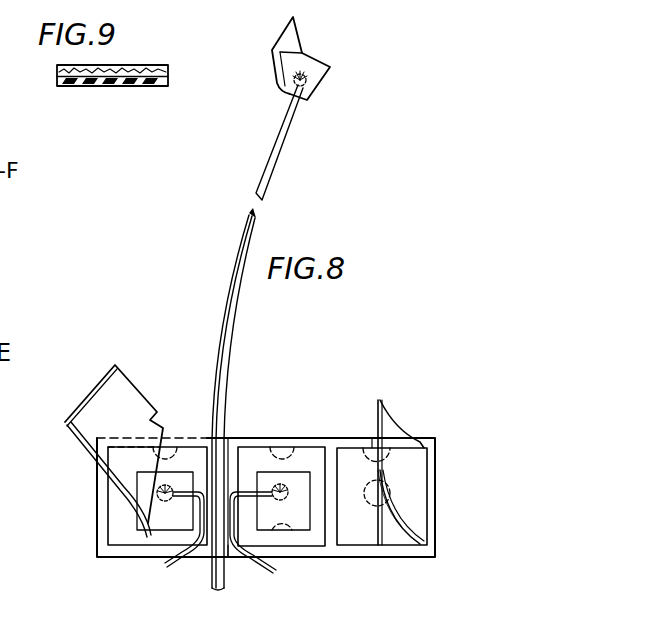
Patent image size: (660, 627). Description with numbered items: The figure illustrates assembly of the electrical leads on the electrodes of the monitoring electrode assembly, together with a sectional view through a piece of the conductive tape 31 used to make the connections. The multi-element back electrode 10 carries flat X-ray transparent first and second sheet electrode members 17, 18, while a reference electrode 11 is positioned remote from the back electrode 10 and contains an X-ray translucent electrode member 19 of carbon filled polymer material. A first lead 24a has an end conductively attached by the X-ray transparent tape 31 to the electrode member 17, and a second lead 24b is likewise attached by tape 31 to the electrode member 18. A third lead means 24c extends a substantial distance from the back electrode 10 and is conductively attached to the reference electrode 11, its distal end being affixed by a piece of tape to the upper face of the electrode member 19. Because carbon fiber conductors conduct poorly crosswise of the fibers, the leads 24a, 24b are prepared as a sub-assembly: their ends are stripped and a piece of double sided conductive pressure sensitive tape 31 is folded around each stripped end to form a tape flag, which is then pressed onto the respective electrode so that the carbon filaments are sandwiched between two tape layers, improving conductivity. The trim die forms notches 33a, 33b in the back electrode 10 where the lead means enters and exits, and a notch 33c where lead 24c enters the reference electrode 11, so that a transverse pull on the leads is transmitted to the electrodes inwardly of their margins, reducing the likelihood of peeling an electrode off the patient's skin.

In FIG. 8, the multi-element back electrode 10 is at (294, 428).
In FIG. 8, the reference electrode 11 is at (397, 413).
In FIG. 8, the first sheet electrode member 17 is at (183, 450).
In FIG. 8, the second sheet electrode member 18 is at (313, 445).
In FIG. 8, the electrode member 19 is at (350, 523).
In FIG. 8, the first lead 24a is at (174, 542).
In FIG. 8, the second lead 24b is at (276, 537).
In FIG. 8, the third lead means 24c is at (266, 178).
In FIG. 9, the conductive pressure sensitive tape 31 is at (106, 91).
In FIG. 8, the conductive pressure sensitive tape 31 is at (172, 444).
In FIG. 8, the notch 33a is at (231, 438).
In FIG. 8, the notch 33b is at (234, 556).
In FIG. 8, the notch 33c is at (373, 437).